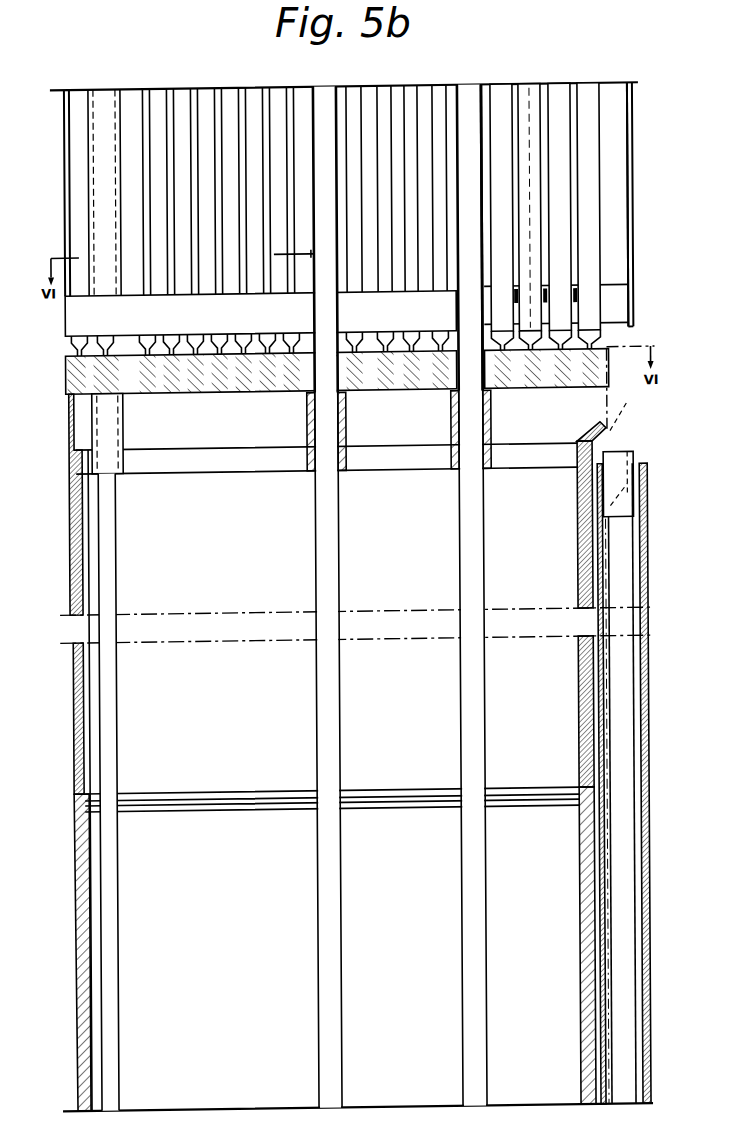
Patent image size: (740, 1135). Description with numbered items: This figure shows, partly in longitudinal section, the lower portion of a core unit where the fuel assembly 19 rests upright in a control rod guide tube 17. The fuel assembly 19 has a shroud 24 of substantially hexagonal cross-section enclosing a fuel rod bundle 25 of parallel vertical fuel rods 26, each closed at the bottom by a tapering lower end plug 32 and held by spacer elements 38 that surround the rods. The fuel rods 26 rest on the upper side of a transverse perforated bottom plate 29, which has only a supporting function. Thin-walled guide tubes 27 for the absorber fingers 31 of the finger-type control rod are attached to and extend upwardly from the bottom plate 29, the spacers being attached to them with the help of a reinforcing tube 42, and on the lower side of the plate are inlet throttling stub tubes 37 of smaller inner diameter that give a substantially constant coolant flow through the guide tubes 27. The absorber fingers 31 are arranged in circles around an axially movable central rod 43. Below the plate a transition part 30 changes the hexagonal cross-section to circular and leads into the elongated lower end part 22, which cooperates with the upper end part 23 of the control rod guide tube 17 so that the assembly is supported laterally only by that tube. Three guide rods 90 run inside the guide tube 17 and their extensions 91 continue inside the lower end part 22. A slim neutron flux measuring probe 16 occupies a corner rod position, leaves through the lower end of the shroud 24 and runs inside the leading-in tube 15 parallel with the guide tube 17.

The leading-in tube 15 is at (645, 730).
The neutron flux measuring probe 16 is at (628, 769).
The control rod guide tube 17 is at (588, 992).
The fuel assembly 19 is at (546, 143).
The elongated lower end part 22 is at (580, 703).
The upper end part 23 is at (586, 675).
The shroud 24 is at (630, 158).
The fuel rod bundle 25 is at (575, 217).
The fuel rod 26 is at (560, 282).
The guide tube 27 is at (486, 110).
The perforated bottom plate 29 is at (534, 391).
The transition part 30 is at (601, 436).
The absorber finger 31 is at (480, 574).
The lower end plug 32 is at (577, 356).
The stub tube 37 is at (492, 428).
The spacer element 38 is at (573, 304).
The reinforcing tube 42 is at (572, 242).
The central rod 43 is at (340, 574).
The guide rod 90 is at (88, 897).
The guide rod extension 91 is at (85, 580).